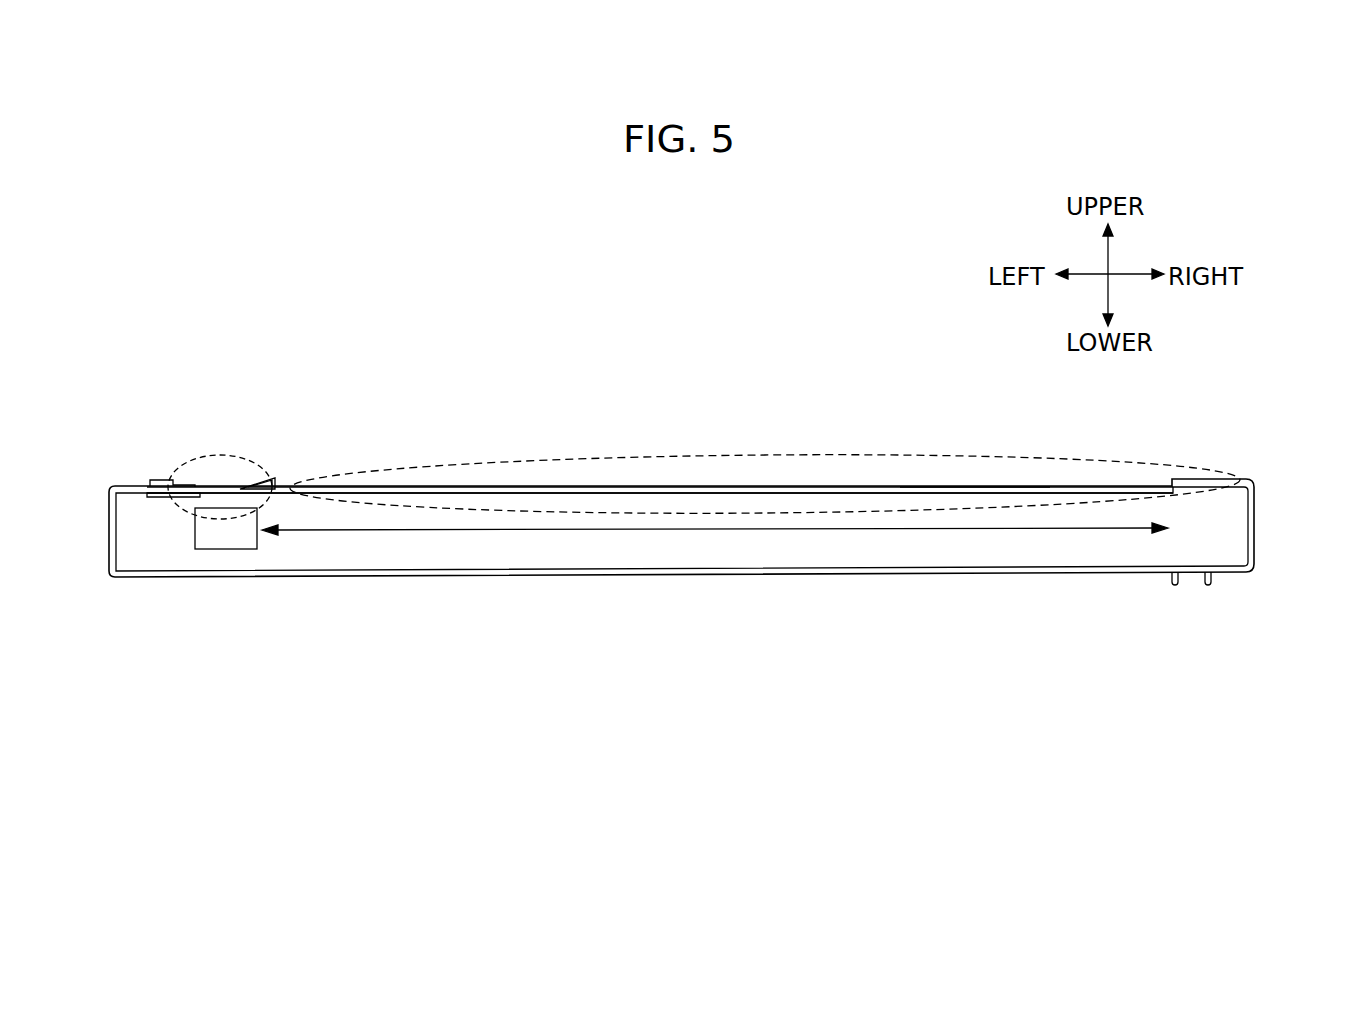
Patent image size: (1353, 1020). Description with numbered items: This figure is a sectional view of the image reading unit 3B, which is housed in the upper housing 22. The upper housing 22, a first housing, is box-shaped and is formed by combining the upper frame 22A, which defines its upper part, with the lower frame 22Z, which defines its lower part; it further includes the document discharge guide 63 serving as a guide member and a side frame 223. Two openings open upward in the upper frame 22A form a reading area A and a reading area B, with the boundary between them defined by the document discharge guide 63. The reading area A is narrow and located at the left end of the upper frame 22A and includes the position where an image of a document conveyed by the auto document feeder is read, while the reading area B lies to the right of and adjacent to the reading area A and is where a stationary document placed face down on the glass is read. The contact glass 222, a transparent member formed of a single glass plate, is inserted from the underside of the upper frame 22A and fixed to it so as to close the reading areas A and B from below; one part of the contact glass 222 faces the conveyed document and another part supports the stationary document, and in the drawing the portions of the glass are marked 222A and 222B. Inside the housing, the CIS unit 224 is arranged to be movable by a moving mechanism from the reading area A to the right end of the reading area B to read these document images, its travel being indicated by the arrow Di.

The image reading unit 3B is at (690, 549).
The upper housing 22 is at (723, 578).
The upper frame 22A is at (1232, 480).
The lower frame 22Z is at (1202, 616).
The contact glass 222 is at (1190, 493).
The left end portion of plate 222A is at (202, 493).
The right portion of plate 222B is at (975, 490).
The side frame 223 is at (160, 478).
The CIS unit 224 is at (233, 542).
The document discharge guide 63 is at (278, 478).
The reading area A is at (236, 457).
The reading area B is at (942, 452).
The arrow Di is at (680, 531).